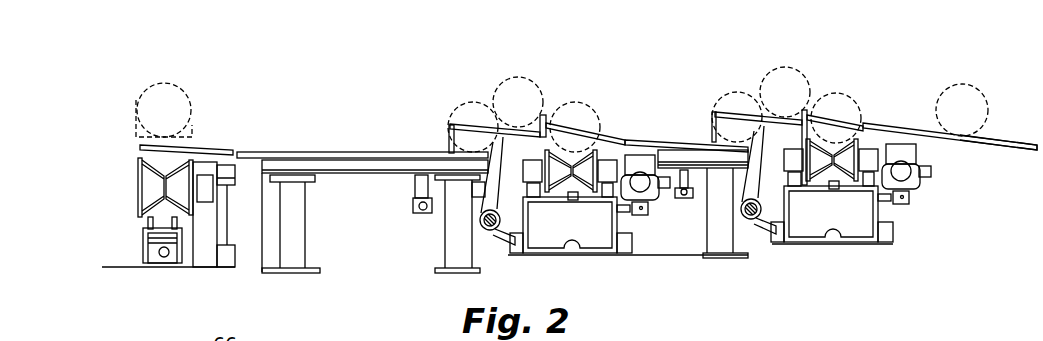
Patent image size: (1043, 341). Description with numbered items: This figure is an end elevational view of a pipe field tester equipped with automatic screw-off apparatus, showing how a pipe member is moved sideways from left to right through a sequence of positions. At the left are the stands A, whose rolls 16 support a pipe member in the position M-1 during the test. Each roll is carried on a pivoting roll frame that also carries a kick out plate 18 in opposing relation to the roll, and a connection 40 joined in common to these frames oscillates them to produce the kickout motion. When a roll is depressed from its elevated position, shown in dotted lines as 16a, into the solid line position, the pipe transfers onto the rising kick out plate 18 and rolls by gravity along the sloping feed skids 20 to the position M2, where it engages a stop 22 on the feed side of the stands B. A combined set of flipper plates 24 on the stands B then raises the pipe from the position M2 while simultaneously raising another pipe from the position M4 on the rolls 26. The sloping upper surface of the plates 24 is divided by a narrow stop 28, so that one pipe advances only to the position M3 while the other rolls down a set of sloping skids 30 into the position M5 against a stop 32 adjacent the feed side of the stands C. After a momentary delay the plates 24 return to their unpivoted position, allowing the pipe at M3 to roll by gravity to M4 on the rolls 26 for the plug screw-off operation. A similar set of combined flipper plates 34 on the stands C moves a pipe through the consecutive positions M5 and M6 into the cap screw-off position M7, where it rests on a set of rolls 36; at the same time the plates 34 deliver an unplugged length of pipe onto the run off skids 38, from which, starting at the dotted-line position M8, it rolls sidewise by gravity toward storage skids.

The pipe member position on the rolls of the stands M-1 is at (140, 100).
The rolls 16 is at (138, 178).
The dotted line elevated position of the rolls 16a is at (137, 128).
The kick out plates 18 is at (212, 147).
The feed skids 20 is at (300, 136).
The stop 22 is at (450, 140).
The combined flipper plates 24 is at (585, 147).
The rolls 26 is at (607, 150).
The narrow stop 28 is at (543, 117).
The sloping skids 30 is at (653, 140).
The stop 32 is at (713, 133).
The combined flipper plates 34 is at (820, 112).
The rolls 36 is at (863, 128).
The run off skids 38 is at (1030, 132).
The oscillating connection to the roll frames 40 is at (166, 258).
The stands A is at (194, 247).
The stands B is at (610, 189).
The stands C is at (836, 176).
The pipe member position M2 is at (450, 105).
The pipe member position M3 is at (512, 76).
The pipe member position M4 is at (578, 104).
The pipe member position M5 is at (718, 93).
The pipe member position M6 is at (789, 67).
The cap screw-off position M7 is at (852, 93).
The pipe member position on the run off skids M8 is at (972, 84).